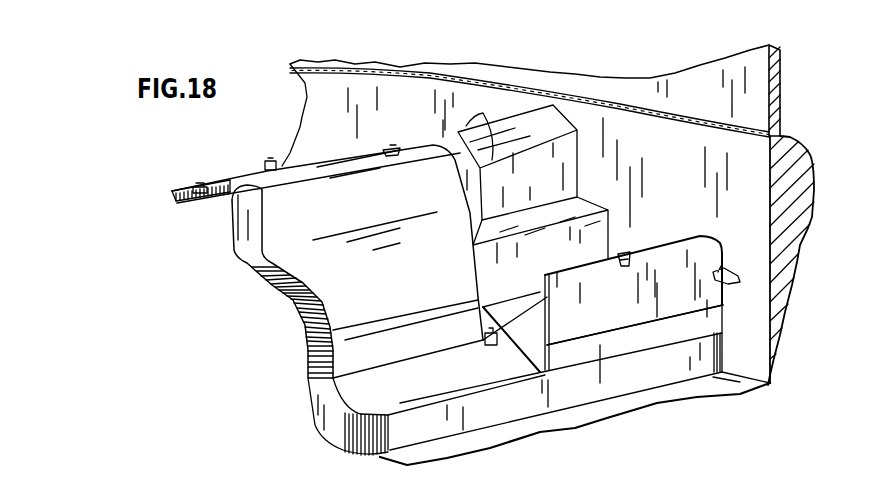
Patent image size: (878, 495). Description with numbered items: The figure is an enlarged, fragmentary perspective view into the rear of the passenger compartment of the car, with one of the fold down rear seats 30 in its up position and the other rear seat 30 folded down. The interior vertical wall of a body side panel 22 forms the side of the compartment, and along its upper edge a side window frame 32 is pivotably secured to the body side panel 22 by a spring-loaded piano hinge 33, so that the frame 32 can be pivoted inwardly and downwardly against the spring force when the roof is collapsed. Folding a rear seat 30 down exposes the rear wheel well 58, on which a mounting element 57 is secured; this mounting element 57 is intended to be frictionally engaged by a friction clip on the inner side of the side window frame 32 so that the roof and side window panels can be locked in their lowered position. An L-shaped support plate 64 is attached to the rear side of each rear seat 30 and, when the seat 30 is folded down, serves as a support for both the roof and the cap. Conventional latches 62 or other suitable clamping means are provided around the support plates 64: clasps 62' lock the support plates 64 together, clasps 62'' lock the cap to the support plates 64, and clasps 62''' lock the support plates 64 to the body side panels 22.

The body side panel 22 is at (800, 183).
The fold down rear seat 30 is at (642, 364).
The side window frame 32 is at (781, 88).
The piano hinge 33 is at (670, 107).
The mounting element 57 is at (487, 116).
The rear wheel well 58 is at (547, 178).
The latch 62 is at (474, 241).
The clasp 62' is at (444, 241).
The clasp 62'' is at (462, 185).
The clasp 62''' is at (474, 213).
The L-shaped support plate 64 is at (252, 183).